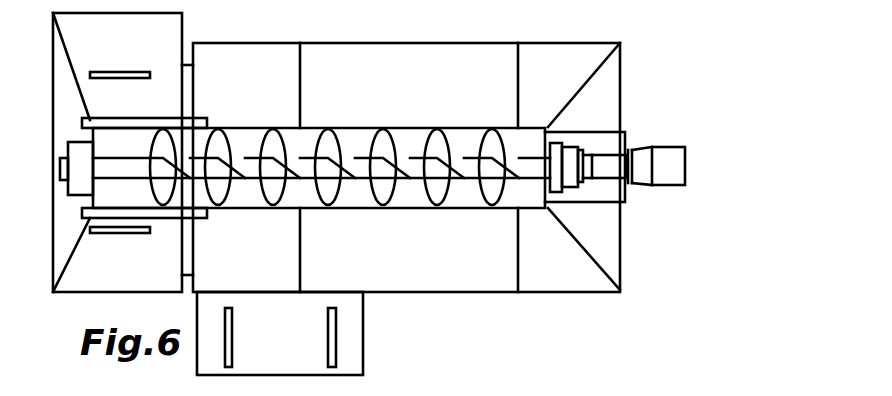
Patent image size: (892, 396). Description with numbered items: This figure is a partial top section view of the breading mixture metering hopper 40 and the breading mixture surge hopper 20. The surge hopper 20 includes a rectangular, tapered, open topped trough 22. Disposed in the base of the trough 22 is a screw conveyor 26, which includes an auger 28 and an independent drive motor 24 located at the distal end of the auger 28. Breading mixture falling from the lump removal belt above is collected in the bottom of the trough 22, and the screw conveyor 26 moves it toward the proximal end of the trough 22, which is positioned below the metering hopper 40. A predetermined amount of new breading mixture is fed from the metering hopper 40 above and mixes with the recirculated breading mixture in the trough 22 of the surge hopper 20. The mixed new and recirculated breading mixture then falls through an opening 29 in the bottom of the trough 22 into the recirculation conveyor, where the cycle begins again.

The breading mixture surge hopper 20 is at (645, 108).
The trough 22 is at (419, 97).
The drive motor 24 is at (685, 163).
The screw conveyor 26 is at (473, 219).
The auger 28 is at (405, 209).
The opening 29 is at (145, 137).
The breading mixture metering hopper 40 is at (84, 268).